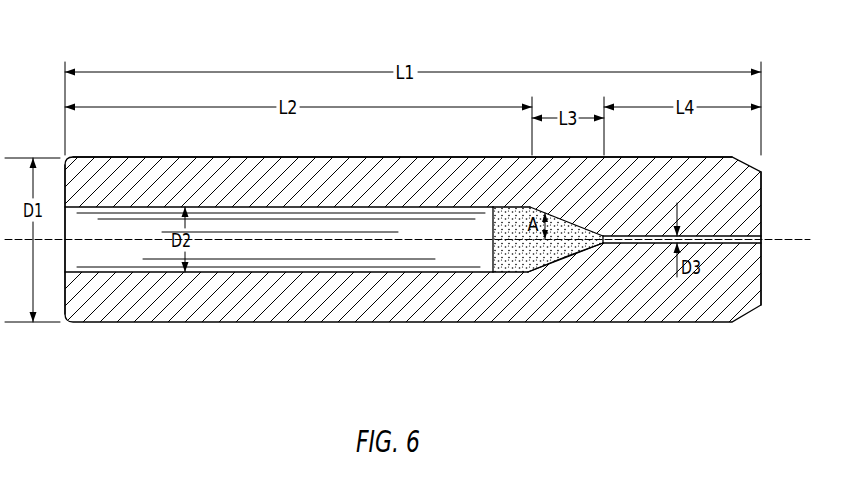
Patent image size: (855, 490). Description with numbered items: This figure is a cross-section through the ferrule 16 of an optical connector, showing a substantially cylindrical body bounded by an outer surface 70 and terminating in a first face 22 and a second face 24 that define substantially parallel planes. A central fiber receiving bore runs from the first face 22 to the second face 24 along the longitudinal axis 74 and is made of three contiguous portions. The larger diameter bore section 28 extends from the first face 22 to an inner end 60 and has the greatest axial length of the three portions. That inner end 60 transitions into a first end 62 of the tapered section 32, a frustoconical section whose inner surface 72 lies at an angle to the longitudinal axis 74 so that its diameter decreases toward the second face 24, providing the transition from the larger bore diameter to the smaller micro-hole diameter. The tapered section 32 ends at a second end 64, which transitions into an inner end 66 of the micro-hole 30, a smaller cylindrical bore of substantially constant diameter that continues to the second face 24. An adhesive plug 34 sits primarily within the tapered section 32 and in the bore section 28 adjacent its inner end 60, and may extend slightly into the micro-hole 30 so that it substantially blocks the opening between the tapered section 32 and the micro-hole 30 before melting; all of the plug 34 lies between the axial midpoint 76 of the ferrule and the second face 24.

The ferrule 16 is at (547, 52).
The first face 22 is at (62, 292).
The second face 24 is at (766, 208).
The bore section 28 is at (243, 262).
The micro-hole 30 is at (738, 242).
The tapered section 32 is at (580, 255).
The adhesive plug 34 is at (518, 268).
The inner end 60 is at (527, 273).
The first end 62 is at (549, 276).
The second end 64 is at (598, 244).
The inner end 66 is at (602, 240).
The outer surface 70 is at (238, 152).
The inner surface 72 is at (558, 205).
The longitudinal axis 74 is at (775, 242).
The axial midpoint 76 is at (413, 152).